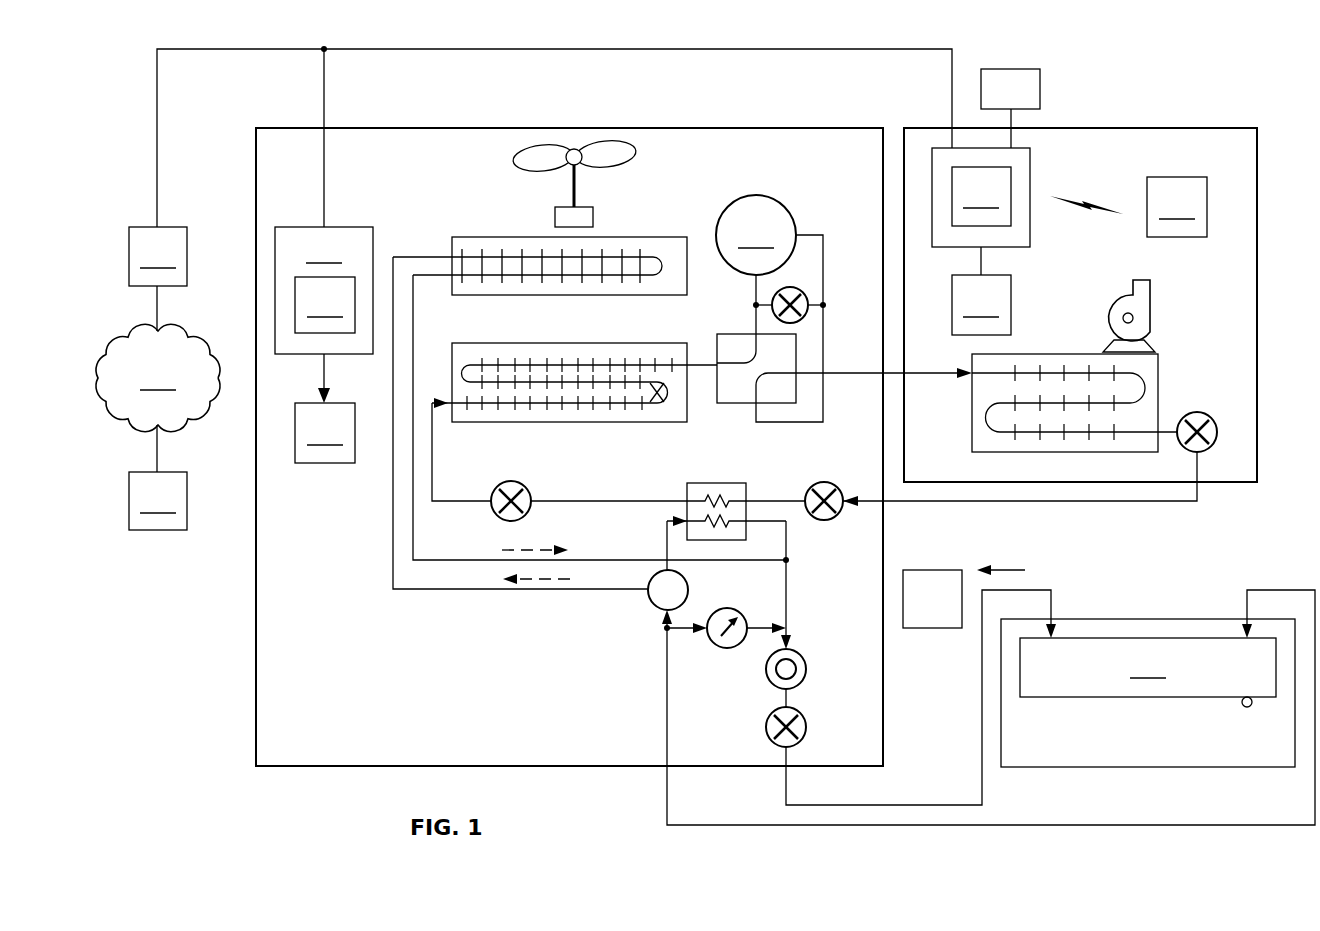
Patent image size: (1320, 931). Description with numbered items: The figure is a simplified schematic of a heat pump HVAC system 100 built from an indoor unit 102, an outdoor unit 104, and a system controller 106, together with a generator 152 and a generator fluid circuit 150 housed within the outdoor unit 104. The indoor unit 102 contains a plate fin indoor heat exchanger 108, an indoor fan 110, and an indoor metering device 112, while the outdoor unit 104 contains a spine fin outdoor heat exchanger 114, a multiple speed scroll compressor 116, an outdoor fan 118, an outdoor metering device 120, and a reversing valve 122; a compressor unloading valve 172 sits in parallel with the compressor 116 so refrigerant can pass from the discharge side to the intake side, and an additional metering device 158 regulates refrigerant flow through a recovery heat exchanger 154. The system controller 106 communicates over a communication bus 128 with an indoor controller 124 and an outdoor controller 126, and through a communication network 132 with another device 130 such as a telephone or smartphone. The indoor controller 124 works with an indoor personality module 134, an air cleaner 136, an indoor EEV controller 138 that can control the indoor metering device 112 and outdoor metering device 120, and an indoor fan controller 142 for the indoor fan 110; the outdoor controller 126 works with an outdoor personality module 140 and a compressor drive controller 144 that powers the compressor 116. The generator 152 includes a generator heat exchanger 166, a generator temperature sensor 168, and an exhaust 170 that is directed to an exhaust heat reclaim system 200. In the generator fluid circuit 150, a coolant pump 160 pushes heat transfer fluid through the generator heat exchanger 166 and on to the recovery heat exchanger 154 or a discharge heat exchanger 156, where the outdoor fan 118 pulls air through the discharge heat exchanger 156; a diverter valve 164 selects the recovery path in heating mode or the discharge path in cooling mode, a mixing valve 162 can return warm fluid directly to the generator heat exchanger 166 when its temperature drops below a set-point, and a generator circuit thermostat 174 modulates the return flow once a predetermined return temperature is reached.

The HVAC system 100 is at (158, 727).
The indoor unit 102 is at (1152, 122).
The outdoor unit 104 is at (390, 124).
The system controller 106 is at (158, 279).
The indoor heat exchanger 108 is at (971, 404).
The indoor fan 110 is at (1155, 312).
The indoor metering device 112 is at (1208, 415).
The outdoor heat exchanger 114 is at (568, 423).
The compressor 116 is at (771, 308).
The outdoor fan 118 is at (518, 157).
The outdoor metering device 120 is at (491, 511).
The reversing valve 122 is at (730, 404).
The indoor controller 124 is at (1032, 178).
The outdoor controller 126 is at (324, 315).
The communication bus 128 is at (247, 50).
The other device 130 is at (158, 501).
The communication network 132 is at (158, 398).
The indoor personality module 134 is at (981, 196).
The air cleaner 136 is at (1042, 90).
The indoor EEV controller 138 is at (1177, 207).
The outdoor personality module 140 is at (325, 305).
The indoor fan controller 142 is at (981, 305).
The compressor drive controller 144 is at (325, 433).
The generator fluid circuit 150 is at (370, 641).
The generator 152 is at (1192, 614).
The recovery heat exchanger 154 is at (687, 493).
The discharge heat exchanger 156 is at (532, 236).
The metering device 158 is at (826, 522).
The coolant pump 160 is at (808, 670).
The mixing valve 162 is at (728, 649).
The diverter valve 164 is at (656, 608).
The generator heat exchanger 166 is at (1148, 667).
The generator temperature sensor 168 is at (1250, 708).
The exhaust 170 is at (1012, 568).
The compressor unloading valve 172 is at (804, 291).
The generator circuit thermostat 174 is at (808, 730).
The exhaust heat reclaim system 200 is at (940, 570).